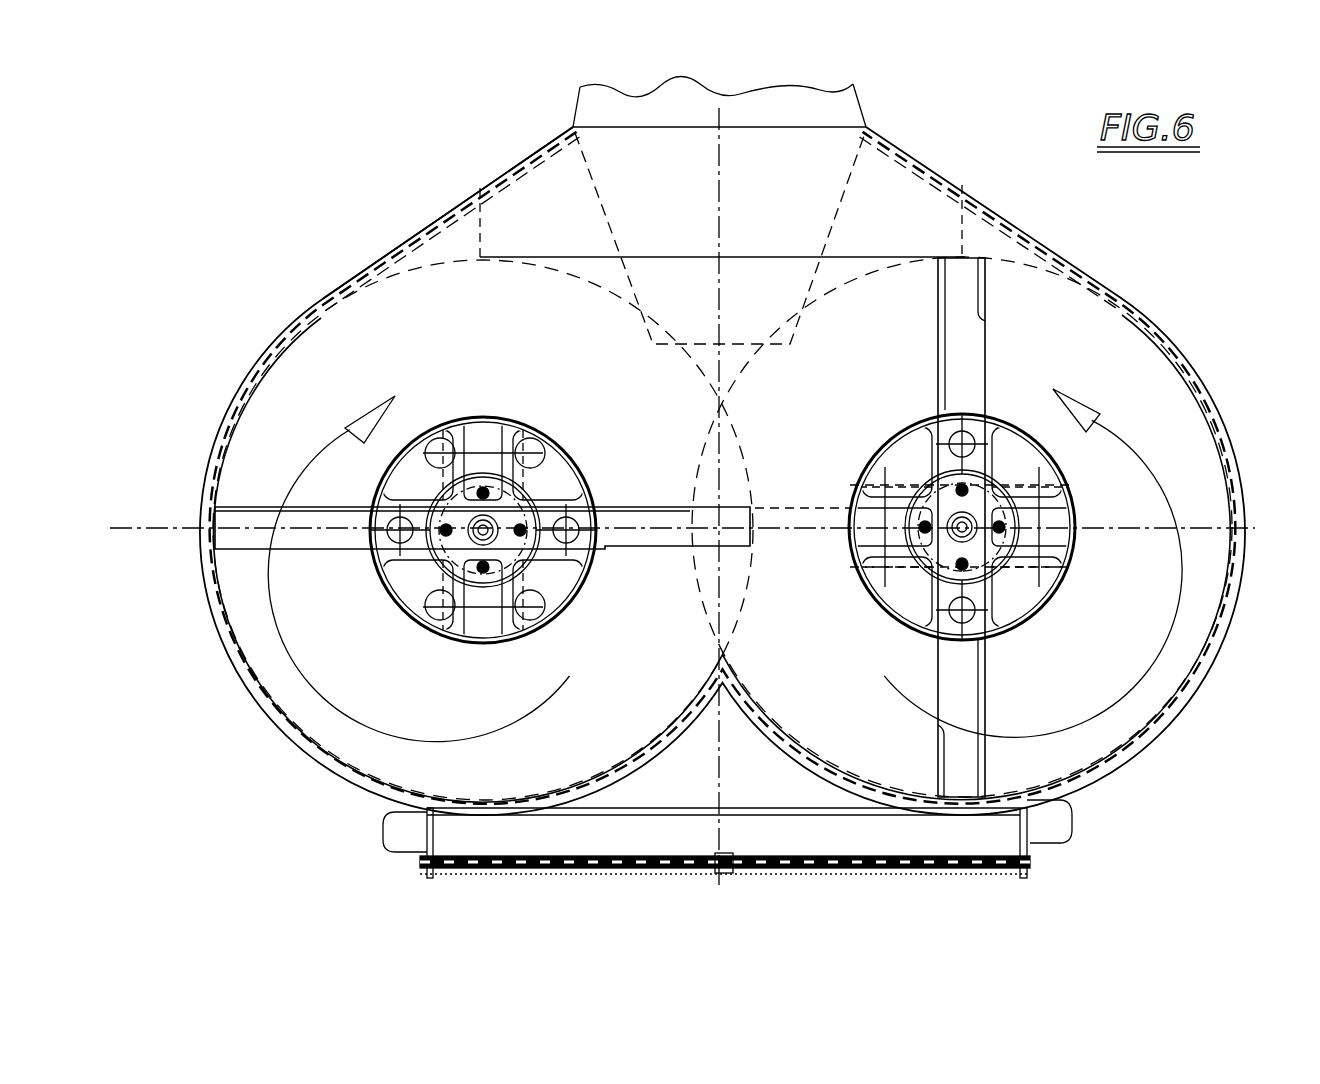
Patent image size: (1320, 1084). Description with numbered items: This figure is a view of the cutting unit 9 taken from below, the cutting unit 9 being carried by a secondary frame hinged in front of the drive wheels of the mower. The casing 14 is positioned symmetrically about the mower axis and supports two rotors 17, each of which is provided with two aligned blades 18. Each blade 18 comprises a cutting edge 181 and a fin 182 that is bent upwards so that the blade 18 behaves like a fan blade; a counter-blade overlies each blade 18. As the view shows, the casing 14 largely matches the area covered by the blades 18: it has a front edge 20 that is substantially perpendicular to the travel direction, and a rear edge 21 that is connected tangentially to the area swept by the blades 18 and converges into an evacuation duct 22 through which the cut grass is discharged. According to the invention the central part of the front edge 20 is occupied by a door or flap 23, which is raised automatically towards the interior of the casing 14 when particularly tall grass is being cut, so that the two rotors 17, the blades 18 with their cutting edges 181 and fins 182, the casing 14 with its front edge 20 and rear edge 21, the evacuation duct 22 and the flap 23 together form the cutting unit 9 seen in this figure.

The cutting unit 9 is at (728, 470).
The casing 14 is at (240, 374).
The rotor 17 is at (913, 605).
The blade 18 is at (637, 527).
The cutting edge 181 is at (937, 322).
The fin 182 is at (980, 302).
The front edge 20 is at (727, 866).
The rear edge 21 is at (492, 184).
The evacuation duct 22 is at (850, 100).
The door or flap 23 is at (686, 872).